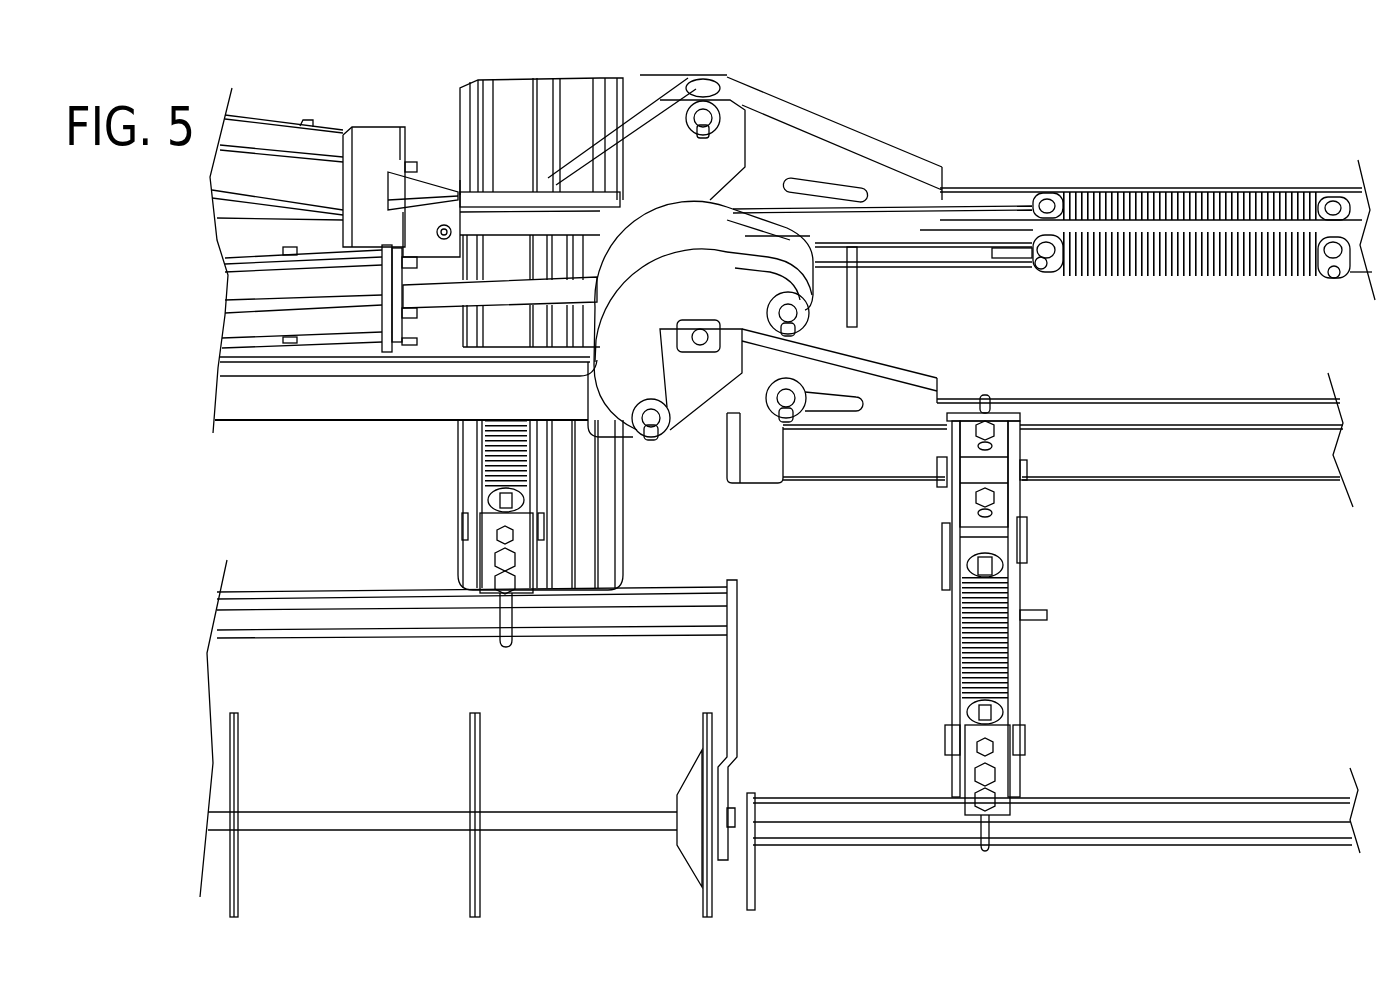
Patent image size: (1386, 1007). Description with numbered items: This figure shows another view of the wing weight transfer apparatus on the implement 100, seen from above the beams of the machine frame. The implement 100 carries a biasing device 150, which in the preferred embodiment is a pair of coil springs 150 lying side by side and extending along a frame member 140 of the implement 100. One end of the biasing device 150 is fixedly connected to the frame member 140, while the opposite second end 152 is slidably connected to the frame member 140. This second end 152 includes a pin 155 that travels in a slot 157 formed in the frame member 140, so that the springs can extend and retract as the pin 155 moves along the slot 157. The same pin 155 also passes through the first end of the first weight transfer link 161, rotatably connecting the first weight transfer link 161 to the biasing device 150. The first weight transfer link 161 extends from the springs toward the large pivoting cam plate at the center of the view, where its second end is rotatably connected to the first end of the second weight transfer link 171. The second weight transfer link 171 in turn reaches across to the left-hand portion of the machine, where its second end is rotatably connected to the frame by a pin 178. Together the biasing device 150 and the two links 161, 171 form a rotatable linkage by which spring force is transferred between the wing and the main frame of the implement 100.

The implement 100 is at (1146, 876).
The frame member 140 is at (1355, 280).
The biasing device 150 is at (1180, 197).
The second end 152 is at (1053, 273).
The pin 155 is at (1042, 274).
The slot 157 is at (1002, 270).
The first weight transfer link 161 is at (967, 232).
The second weight transfer link 171 is at (597, 216).
The pin 178 is at (446, 224).